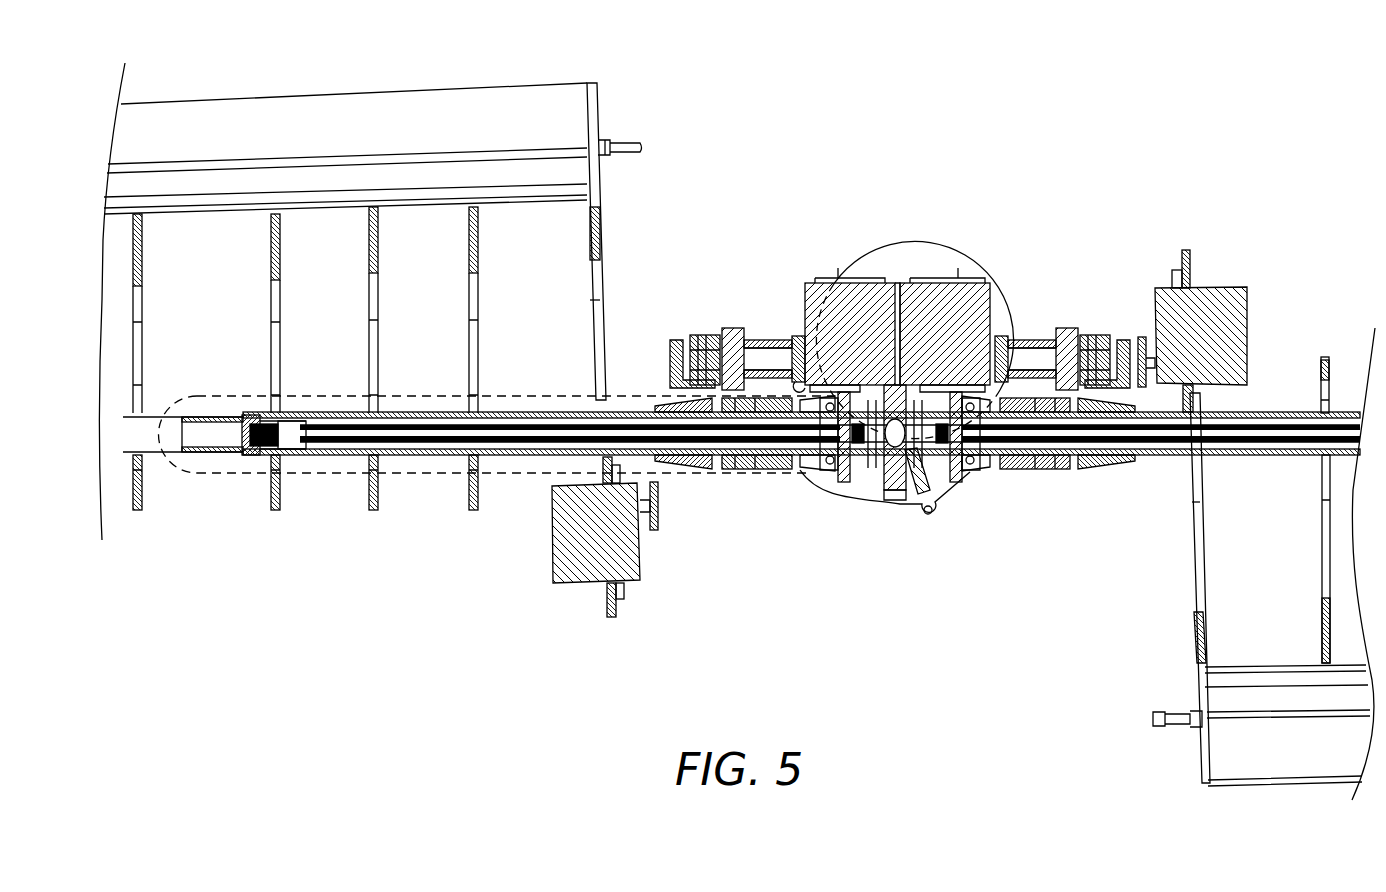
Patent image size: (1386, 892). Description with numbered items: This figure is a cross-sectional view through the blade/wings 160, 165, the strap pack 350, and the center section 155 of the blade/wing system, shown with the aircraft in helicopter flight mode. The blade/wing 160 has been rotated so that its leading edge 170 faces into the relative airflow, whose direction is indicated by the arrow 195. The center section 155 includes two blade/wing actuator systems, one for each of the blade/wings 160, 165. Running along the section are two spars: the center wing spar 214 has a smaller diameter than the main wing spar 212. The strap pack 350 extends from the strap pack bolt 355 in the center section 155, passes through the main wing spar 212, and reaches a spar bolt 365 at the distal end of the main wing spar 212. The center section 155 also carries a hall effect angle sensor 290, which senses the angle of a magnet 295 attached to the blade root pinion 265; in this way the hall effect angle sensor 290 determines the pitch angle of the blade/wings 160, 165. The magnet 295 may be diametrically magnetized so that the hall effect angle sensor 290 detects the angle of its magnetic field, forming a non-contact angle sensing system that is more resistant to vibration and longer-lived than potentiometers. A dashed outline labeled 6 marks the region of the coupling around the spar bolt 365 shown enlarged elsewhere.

The detail region of FIG. 6 is at (200, 473).
The center section 155 is at (915, 160).
The blade/wing 160 is at (1190, 570).
The blade/wing 165 is at (610, 292).
The leading edge 170 is at (1325, 357).
The arrow 195 is at (1283, 298).
The main wing spar 212 is at (420, 411).
The center wing spar 214 is at (153, 413).
The blade root pinion 265 is at (732, 328).
The hall effect angle sensor 290 is at (670, 340).
The magnet 295 is at (700, 335).
The strap pack 350 is at (553, 437).
The strap pack bolt 355 is at (855, 483).
The spar bolt 365 is at (267, 456).